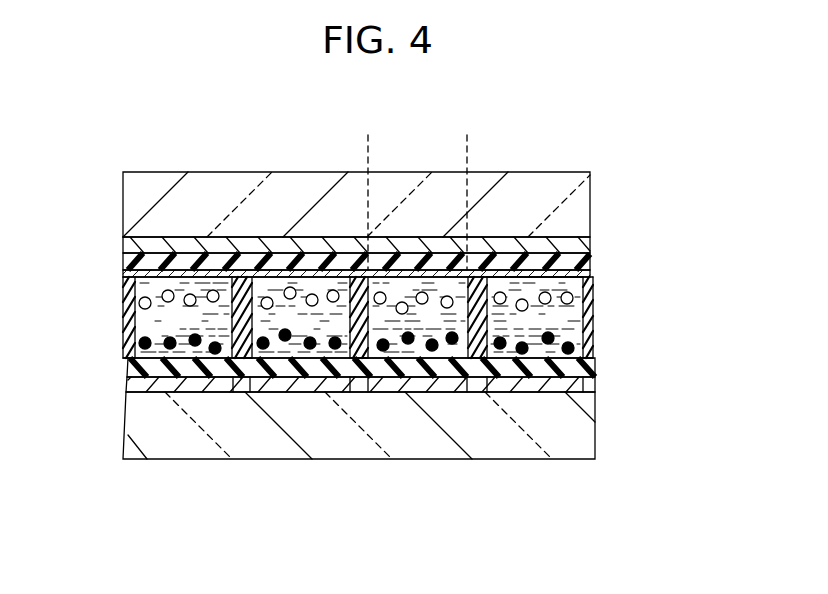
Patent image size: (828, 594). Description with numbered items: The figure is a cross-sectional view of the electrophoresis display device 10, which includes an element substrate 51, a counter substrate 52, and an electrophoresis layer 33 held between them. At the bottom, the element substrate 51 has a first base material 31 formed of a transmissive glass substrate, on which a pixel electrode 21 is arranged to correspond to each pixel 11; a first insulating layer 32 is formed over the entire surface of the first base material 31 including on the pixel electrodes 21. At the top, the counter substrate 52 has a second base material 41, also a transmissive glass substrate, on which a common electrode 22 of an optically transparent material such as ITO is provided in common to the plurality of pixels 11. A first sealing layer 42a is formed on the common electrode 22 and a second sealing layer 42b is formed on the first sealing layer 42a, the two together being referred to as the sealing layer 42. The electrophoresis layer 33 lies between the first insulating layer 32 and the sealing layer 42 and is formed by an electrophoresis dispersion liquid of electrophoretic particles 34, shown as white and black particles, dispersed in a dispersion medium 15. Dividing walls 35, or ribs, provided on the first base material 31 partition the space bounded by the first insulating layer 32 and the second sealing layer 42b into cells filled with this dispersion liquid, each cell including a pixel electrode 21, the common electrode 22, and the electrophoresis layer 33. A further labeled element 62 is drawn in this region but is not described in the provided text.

The electrophoresis display device 10 is at (527, 138).
The pixel 11 is at (467, 135).
The dispersion medium 15 is at (587, 321).
The pixel electrode 21 is at (497, 388).
The common electrode 22 is at (586, 243).
The first base material 31 is at (590, 432).
The first insulating layer 32 is at (590, 368).
The electrophoresis layer 33 is at (120, 277).
The electrophoretic particles 34 is at (290, 287).
The dividing wall 35 is at (588, 347).
The second base material 41 is at (586, 203).
The sealing layer 42 is at (668, 252).
The first sealing layer 42a is at (590, 261).
The second sealing layer 42b is at (590, 275).
The element substrate 51 is at (662, 332).
The counter substrate 52 is at (662, 193).
The adhesive portion 62 is at (512, 270).